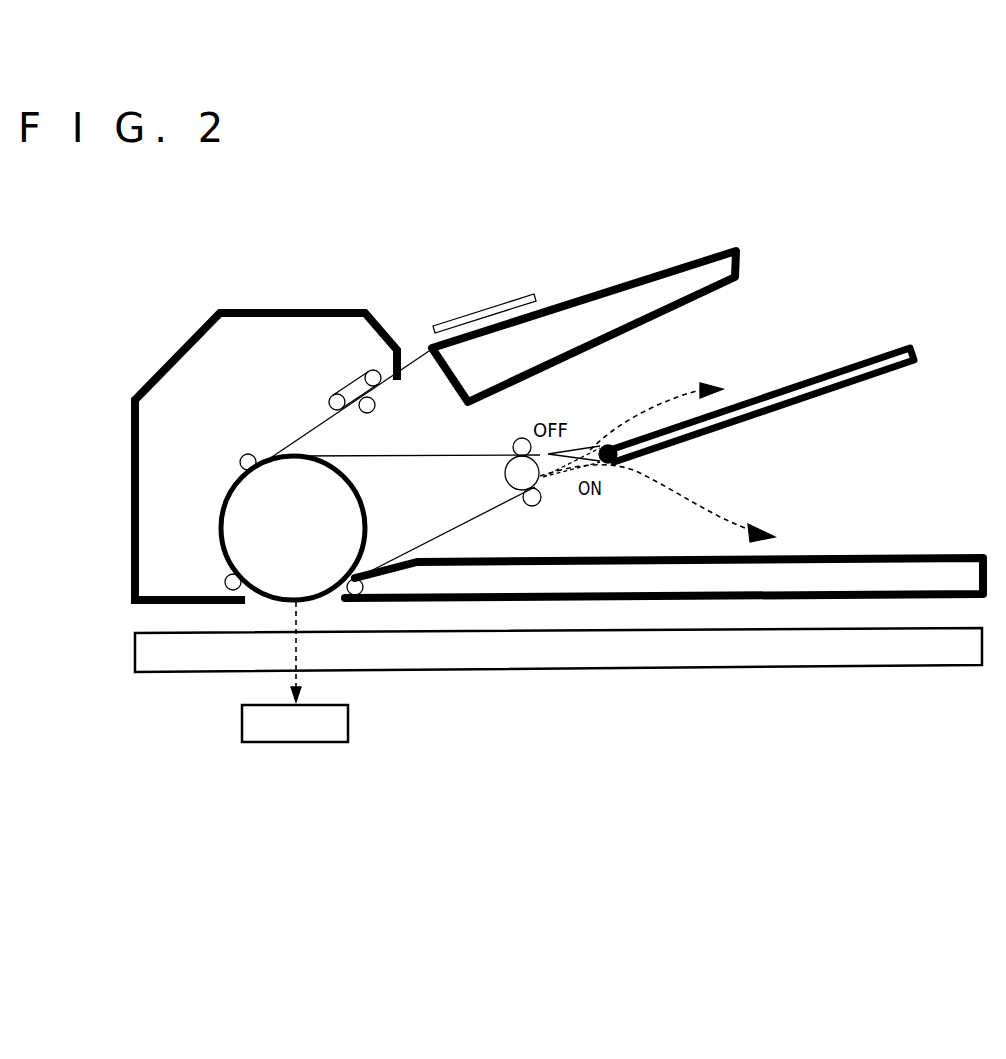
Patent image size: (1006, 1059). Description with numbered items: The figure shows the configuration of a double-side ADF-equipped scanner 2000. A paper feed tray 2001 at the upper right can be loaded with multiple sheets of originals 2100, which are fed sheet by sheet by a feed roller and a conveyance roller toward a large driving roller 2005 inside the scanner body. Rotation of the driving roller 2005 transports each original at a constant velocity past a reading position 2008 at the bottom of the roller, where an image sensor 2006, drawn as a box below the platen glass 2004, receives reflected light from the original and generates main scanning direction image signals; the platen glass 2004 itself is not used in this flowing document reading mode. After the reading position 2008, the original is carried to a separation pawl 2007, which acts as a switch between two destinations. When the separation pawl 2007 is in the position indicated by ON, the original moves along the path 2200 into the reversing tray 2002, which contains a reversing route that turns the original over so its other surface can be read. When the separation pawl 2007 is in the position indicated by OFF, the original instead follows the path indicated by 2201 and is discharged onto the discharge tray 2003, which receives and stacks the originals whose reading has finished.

The scanner 2000 is at (216, 254).
The paper feed tray 2001 is at (736, 250).
The reversing tray 2002 is at (909, 344).
The discharge tray 2003 is at (948, 557).
The platen glass 2004 is at (947, 666).
The driving roller 2005 is at (232, 490).
The image sensor 2006 is at (313, 742).
The separation pawl 2007 is at (566, 483).
The reading position 2008 is at (297, 601).
The originals 2100 is at (512, 298).
The path to reversing tray 2200 is at (672, 397).
The path to discharge tray 2201 is at (728, 521).